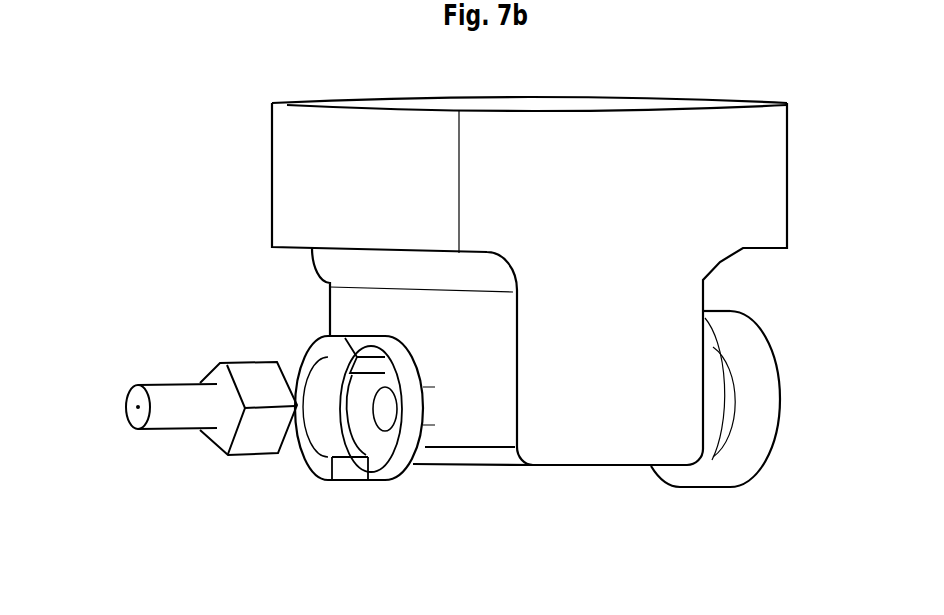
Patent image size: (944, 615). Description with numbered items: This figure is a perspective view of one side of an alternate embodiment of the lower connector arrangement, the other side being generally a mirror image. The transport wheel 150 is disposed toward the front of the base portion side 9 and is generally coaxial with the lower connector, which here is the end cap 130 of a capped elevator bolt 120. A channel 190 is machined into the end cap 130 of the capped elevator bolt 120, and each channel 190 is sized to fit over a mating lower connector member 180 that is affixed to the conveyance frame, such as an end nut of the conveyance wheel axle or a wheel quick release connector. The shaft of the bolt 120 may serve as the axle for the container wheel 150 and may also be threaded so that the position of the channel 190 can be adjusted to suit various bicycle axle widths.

The base portion side 9 is at (604, 381).
The capped elevator bolt 120 is at (438, 407).
The end cap 130 is at (313, 472).
The transport wheel 150 is at (755, 422).
The mating lower connector member 180 is at (192, 402).
The channel 190 is at (310, 383).